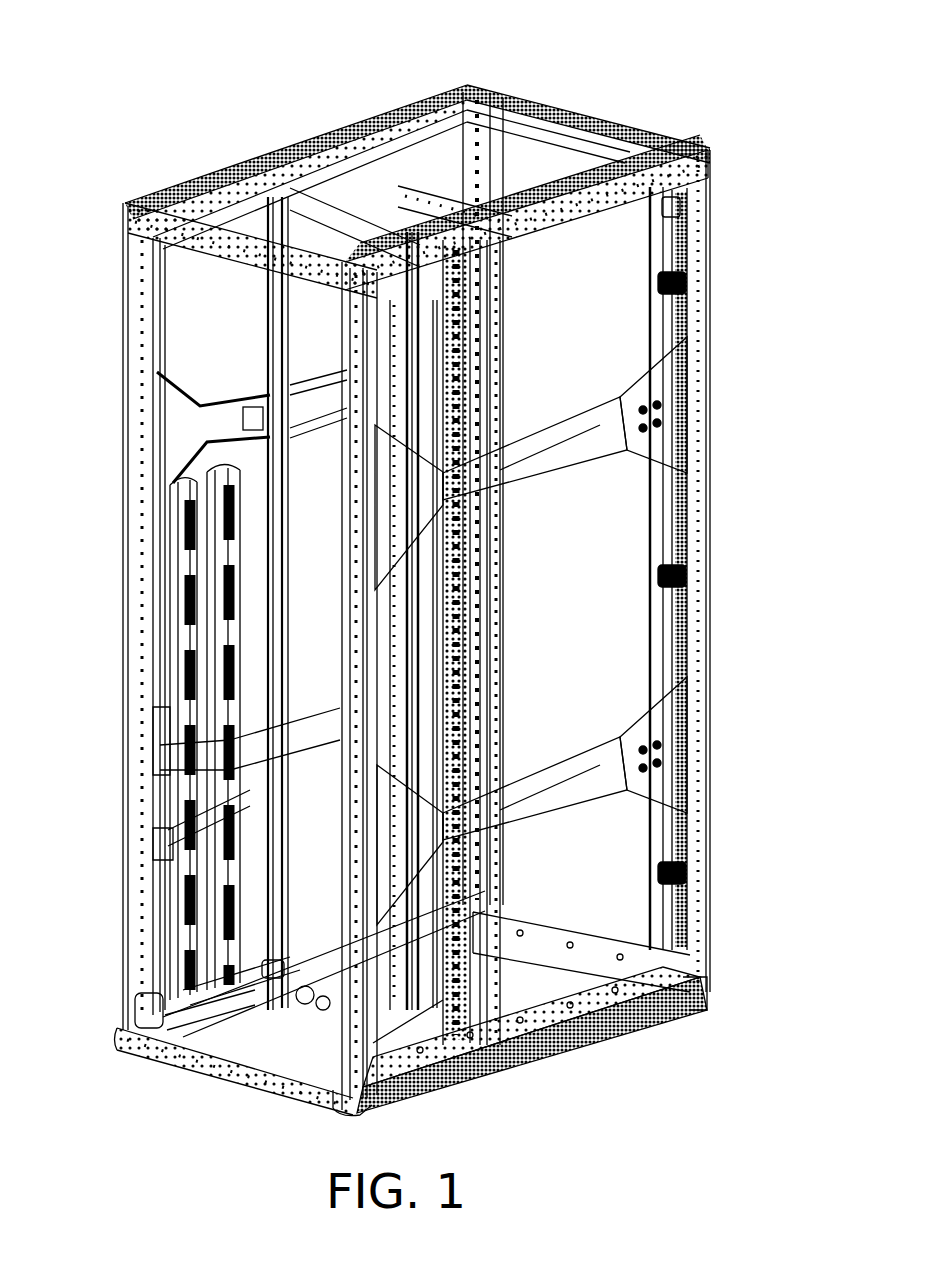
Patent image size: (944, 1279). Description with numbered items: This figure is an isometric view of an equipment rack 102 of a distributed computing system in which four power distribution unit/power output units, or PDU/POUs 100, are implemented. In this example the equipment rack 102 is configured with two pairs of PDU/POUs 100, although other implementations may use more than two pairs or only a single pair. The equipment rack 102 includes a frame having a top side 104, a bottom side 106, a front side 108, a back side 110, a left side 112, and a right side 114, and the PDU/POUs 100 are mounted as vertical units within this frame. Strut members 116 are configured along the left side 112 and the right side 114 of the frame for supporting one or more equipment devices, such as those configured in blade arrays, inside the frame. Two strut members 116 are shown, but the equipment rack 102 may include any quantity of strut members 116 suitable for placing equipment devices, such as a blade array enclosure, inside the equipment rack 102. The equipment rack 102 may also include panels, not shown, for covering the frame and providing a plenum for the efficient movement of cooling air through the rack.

The PDU/POU 100 is at (160, 590).
The equipment rack 102 is at (551, 43).
The top side 104 is at (427, 160).
The bottom side 106 is at (618, 1040).
The front side 108 is at (125, 762).
The back side 110 is at (723, 244).
The left side 112 is at (110, 344).
The right side 114 is at (640, 645).
The strut member 116 is at (557, 420).